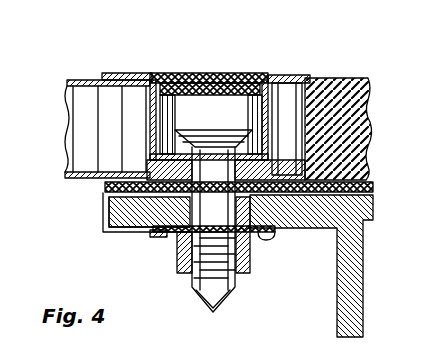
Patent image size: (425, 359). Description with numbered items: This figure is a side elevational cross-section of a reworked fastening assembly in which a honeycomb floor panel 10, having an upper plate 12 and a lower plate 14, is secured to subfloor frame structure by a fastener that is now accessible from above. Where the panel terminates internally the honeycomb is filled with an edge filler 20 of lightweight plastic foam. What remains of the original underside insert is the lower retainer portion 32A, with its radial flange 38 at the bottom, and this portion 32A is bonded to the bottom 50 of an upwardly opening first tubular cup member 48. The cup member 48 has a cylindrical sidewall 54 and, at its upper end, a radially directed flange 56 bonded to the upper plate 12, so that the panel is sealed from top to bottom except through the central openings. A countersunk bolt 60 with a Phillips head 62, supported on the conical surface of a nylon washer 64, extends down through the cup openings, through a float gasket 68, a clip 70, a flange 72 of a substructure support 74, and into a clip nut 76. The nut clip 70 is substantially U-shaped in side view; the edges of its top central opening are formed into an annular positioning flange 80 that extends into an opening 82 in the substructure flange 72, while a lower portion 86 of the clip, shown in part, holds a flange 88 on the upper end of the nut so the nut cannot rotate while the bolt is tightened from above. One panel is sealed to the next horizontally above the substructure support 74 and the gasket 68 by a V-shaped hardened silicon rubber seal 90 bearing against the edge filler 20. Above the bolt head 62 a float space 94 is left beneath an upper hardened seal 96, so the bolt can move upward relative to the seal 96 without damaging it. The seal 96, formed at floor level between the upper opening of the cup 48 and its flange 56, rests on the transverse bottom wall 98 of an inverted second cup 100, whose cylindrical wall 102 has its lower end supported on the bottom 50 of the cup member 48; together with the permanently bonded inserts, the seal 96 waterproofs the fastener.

The honeycomb floor panel 10 is at (66, 134).
The upper plate 12 is at (77, 82).
The lower plate 14 is at (89, 180).
The edge filler 20 is at (373, 138).
The retainer portion 32A is at (277, 226).
The radial flange 38 is at (106, 190).
The first tubular cup member 48 is at (296, 66).
The bottom 50 is at (157, 202).
The cylindrical sidewall 54 is at (154, 108).
The radially directed flange 56 is at (125, 72).
The bolt 60 is at (220, 304).
The Phillips head 62 is at (237, 103).
The nylon washer 64 is at (180, 98).
The float gasket 68 is at (376, 193).
The nut clip 70 is at (110, 231).
The flange of substructure support 72 is at (322, 220).
The substructure support 74 is at (364, 297).
The clip nut 76 is at (242, 273).
The annular positioning flange 80 is at (149, 236).
The opening in substructure flange 82 is at (262, 248).
The clip portion 86 is at (261, 238).
The nut flange 88 is at (257, 240).
The V-shaped hardened seal 90 is at (367, 96).
The float space 94 is at (210, 140).
The upper hardened seal 96 is at (180, 110).
The bottom wall 98 is at (248, 110).
The inverted second cup 100 is at (250, 116).
The cylindrical wall 102 is at (306, 72).